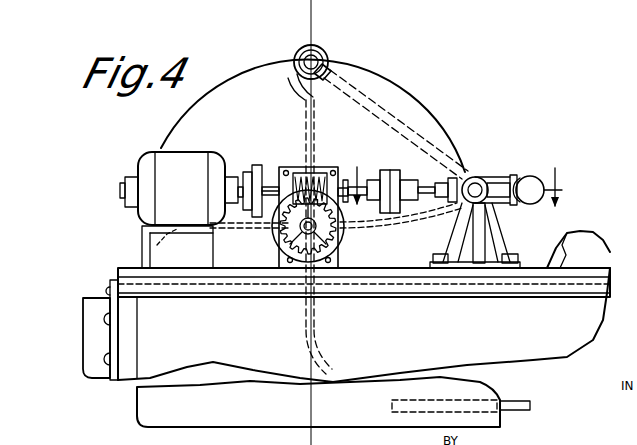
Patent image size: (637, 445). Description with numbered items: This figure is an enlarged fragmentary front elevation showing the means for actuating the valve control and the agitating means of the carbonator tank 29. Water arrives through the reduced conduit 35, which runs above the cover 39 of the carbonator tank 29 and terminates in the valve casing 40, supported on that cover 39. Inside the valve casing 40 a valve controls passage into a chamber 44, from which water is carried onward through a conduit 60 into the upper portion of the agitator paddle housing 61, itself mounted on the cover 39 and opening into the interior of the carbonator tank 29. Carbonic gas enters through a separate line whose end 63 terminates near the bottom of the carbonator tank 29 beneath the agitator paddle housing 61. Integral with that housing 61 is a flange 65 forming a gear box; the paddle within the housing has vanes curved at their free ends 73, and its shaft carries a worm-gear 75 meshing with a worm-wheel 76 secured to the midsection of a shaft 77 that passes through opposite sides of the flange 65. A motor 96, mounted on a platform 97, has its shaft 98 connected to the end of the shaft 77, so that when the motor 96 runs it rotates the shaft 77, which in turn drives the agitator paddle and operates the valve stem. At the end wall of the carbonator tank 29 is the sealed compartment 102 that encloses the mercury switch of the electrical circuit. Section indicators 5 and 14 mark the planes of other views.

The section line 5- 5 is at (336, 25).
The section line 14- 14 is at (466, 174).
The carbonator tank 29 is at (166, 403).
The reduced conduit 35 is at (531, 186).
The cover 39 is at (575, 233).
The valve casing 40 is at (486, 176).
The chamber 44 is at (497, 246).
The conduit 60 is at (353, 90).
The agitator paddle housing 61 is at (409, 104).
The end of carbonic gas conduit 63 is at (424, 402).
The flange 65 is at (340, 244).
The curved ends of vanes 73 is at (293, 92).
The worm-gear 75 is at (278, 240).
The worm-wheel 76 is at (296, 172).
The shaft 77 is at (274, 186).
The motor 96 is at (172, 175).
The platform 97 is at (150, 247).
The motor shaft 98 is at (243, 178).
The sealed compartment 102 is at (93, 336).